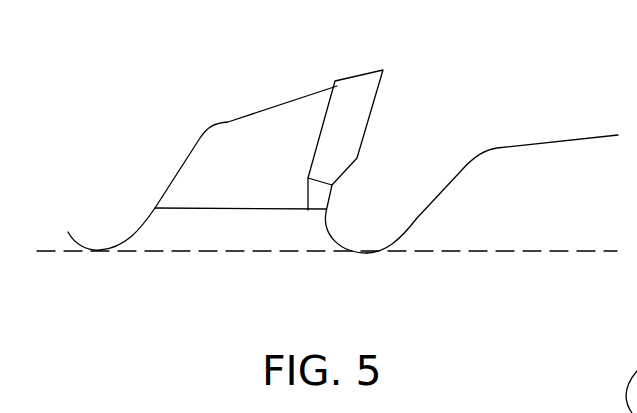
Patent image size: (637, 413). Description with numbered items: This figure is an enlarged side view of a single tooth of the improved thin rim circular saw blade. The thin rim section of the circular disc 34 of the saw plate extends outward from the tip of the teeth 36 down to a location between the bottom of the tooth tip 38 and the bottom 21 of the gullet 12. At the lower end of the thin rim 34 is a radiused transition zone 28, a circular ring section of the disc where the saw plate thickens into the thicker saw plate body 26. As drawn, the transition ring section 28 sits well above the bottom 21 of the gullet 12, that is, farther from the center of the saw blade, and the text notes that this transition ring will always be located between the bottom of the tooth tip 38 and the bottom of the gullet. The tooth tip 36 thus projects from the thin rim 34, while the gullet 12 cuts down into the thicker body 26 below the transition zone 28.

The gullet 12 is at (363, 218).
The bottom of the gullet 21 is at (503, 252).
The saw plate body 26 is at (170, 235).
The radiused transition zone 28 is at (155, 208).
The thin rim section of the circular disc 34 is at (222, 145).
The tip of the teeth 36 is at (335, 81).
The bottom of the tooth tip 38 is at (308, 210).